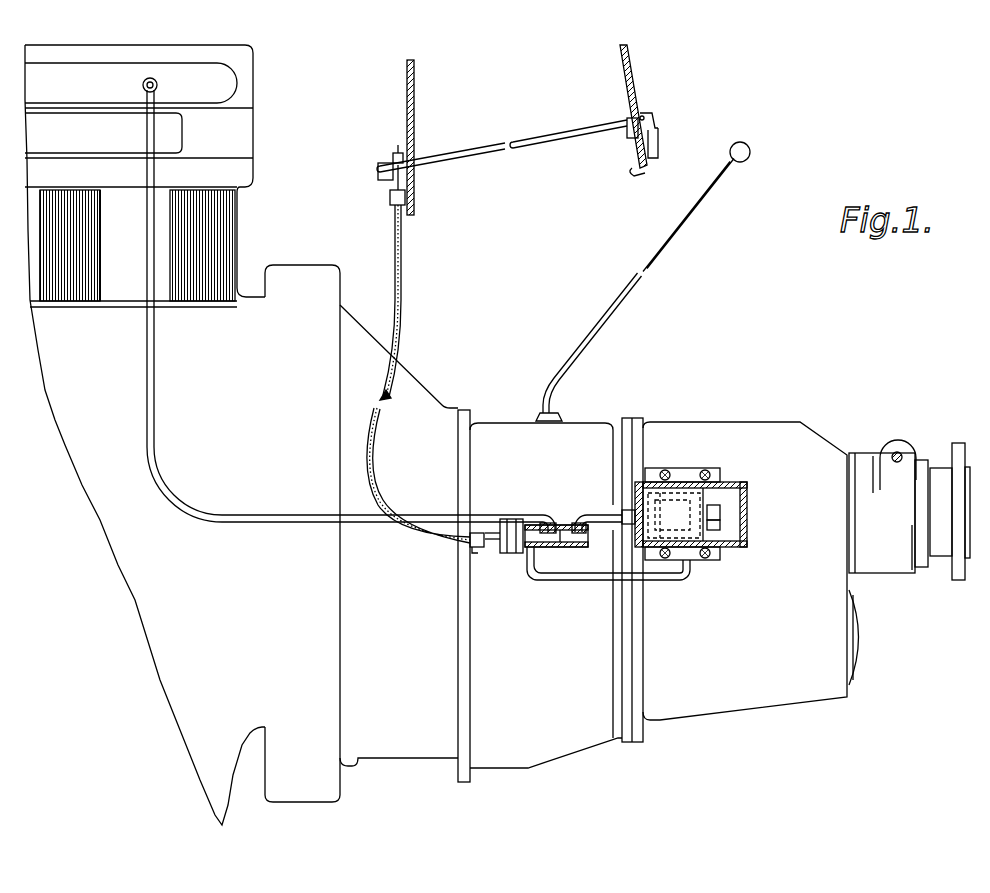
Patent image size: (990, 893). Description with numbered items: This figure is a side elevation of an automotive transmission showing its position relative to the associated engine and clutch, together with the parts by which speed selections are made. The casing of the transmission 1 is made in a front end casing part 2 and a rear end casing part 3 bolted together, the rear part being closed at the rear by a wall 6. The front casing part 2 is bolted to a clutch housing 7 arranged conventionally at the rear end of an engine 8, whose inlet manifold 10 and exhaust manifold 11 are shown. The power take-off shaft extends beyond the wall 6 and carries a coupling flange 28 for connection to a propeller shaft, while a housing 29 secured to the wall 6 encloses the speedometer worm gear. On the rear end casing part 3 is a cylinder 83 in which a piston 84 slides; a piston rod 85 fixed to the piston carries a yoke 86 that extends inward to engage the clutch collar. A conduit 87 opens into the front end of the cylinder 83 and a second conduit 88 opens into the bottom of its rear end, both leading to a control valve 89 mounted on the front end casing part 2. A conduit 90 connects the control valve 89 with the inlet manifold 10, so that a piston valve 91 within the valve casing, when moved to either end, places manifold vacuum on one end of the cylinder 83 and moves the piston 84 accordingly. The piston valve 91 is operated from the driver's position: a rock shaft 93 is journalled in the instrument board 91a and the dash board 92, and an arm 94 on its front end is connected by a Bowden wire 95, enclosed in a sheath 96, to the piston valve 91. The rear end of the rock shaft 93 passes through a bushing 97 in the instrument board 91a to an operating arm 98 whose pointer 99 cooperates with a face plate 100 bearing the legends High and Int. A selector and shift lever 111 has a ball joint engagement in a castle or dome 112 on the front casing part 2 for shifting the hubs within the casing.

The casing of the transmission 1 is at (620, 414).
The front end casing part 2 is at (500, 430).
The rear end casing part 3 is at (742, 437).
The wall 6 is at (851, 585).
The clutch housing 7 is at (358, 324).
The engine 8 is at (272, 238).
The inlet manifold 10 is at (204, 97).
The exhaust manifold 11 is at (176, 151).
The coupling flange 28 is at (963, 445).
The housing 29 is at (905, 573).
The cylinder 83 is at (681, 490).
The piston 84 is at (668, 545).
The piston rod 85 is at (722, 510).
The yoke 86 is at (722, 527).
The conduit 87 is at (610, 512).
The second conduit 88 is at (590, 582).
The control valve 89 is at (592, 536).
The conduit 90 is at (311, 502).
The piston valve 91 is at (562, 547).
The instrument board 91a is at (628, 62).
The dash board 92 is at (414, 93).
The rock shaft 93 is at (540, 147).
The arm 94 is at (393, 160).
The Bowden wire 95 is at (485, 548).
The sheath 96 is at (402, 297).
The bushing 97 is at (627, 135).
The operating arm 98 is at (657, 147).
The pointer 99 is at (645, 121).
The face plate 100 is at (640, 114).
The selector and shift lever 111 is at (607, 316).
The castle or dome 112 is at (559, 417).